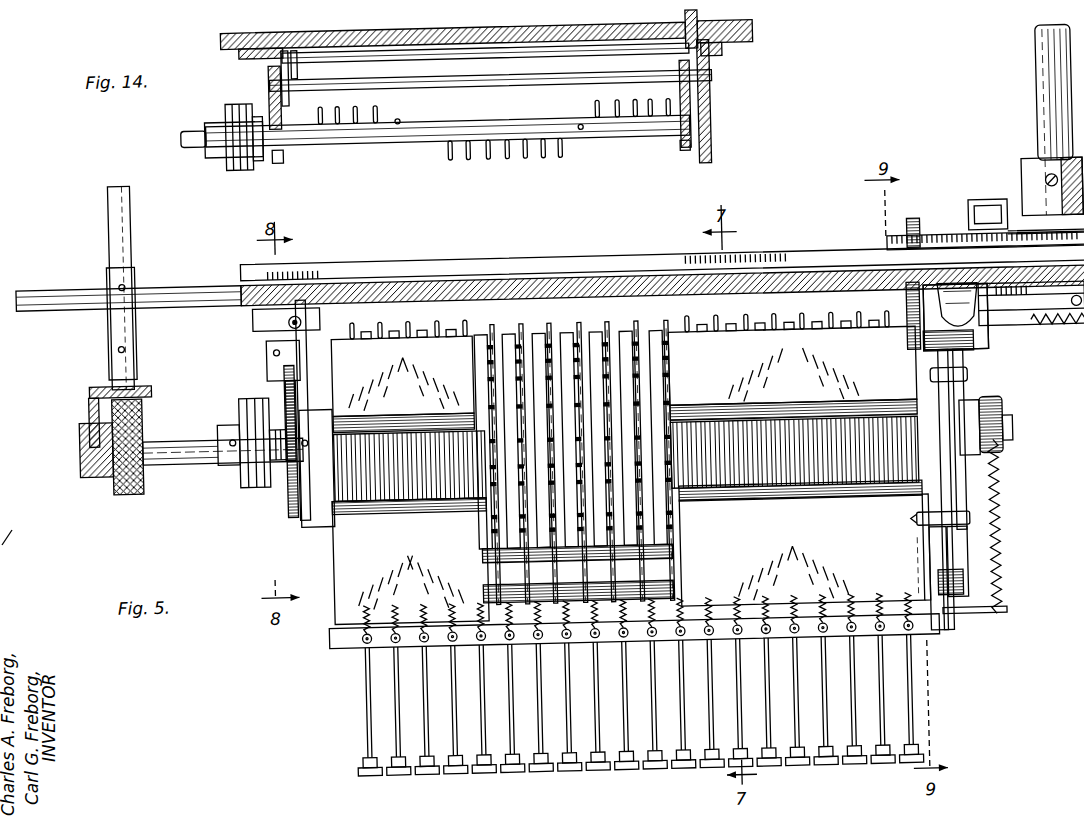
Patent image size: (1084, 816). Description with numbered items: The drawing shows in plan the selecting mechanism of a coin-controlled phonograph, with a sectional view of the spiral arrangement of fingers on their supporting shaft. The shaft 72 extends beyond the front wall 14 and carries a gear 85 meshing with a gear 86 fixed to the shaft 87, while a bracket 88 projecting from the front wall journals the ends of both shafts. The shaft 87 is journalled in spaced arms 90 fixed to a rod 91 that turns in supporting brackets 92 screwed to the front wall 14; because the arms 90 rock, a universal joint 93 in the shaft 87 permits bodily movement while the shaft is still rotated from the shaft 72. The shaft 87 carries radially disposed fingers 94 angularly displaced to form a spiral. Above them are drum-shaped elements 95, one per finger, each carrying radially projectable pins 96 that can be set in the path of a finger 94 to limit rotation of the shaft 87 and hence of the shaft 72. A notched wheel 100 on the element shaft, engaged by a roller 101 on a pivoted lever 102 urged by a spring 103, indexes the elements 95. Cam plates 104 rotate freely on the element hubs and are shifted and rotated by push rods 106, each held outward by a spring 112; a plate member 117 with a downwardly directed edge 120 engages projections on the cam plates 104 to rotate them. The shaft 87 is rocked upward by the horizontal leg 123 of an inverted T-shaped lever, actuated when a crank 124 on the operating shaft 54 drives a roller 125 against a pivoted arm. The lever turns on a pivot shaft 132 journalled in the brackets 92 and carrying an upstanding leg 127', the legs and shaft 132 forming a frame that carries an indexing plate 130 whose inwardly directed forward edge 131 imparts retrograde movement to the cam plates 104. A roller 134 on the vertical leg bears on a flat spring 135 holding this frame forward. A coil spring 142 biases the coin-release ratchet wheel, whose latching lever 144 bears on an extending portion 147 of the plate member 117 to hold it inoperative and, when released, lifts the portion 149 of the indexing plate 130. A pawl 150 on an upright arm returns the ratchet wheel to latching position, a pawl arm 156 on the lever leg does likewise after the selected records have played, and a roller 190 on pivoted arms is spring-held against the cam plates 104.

In FIG. 14, the front wall 14 is at (750, 36).
In FIG. 5, the front wall 14 is at (594, 277).
In FIG. 5, the operating shaft 54 is at (1049, 72).
In FIG. 5, the shaft 72 is at (118, 216).
In FIG. 5, the gear 85 is at (90, 465).
In FIG. 5, the gear 86 is at (130, 483).
In FIG. 14, the shaft 87 is at (188, 124).
In FIG. 5, the shaft 87 is at (182, 431).
In FIG. 5, the bracket 88 is at (105, 375).
In FIG. 14, the spaced arms 90 is at (278, 158).
In FIG. 14, the rod 91 is at (522, 86).
In FIG. 14, the supporting brackets 92 is at (256, 50).
In FIG. 5, the supporting brackets 92 is at (316, 298).
In FIG. 14, the universal joint 93 is at (232, 162).
In FIG. 5, the universal joint 93 is at (250, 479).
In FIG. 14, the fingers 94 is at (526, 161).
In FIG. 5, the elements 95 is at (513, 330).
In FIG. 5, the projectable pins 96 is at (630, 340).
In FIG. 5, the notched wheel 100 is at (292, 510).
In FIG. 5, the roller 101 is at (275, 455).
In FIG. 5, the pivoted lever 102 is at (270, 349).
In FIG. 5, the spring 103 is at (292, 312).
In FIG. 5, the cam plates 104 is at (528, 325).
In FIG. 5, the push rods 106 is at (366, 699).
In FIG. 5, the spring 112 is at (412, 592).
In FIG. 5, the plate member 117 is at (346, 594).
In FIG. 5, the downwardly directed edge 120 is at (805, 543).
In FIG. 14, the horizontally disposed leg 123 is at (692, 104).
In FIG. 5, the horizontally disposed leg 123 is at (918, 226).
In FIG. 5, the crank 124 is at (987, 202).
In FIG. 5, the roller 125 is at (981, 238).
In FIG. 14, the upstanding leg 127' is at (326, 67).
In FIG. 5, the indexing plate 130 is at (395, 350).
In FIG. 5, the inwardly directed forward edge 131 is at (853, 416).
In FIG. 14, the pivot shaft 132 is at (582, 63).
In FIG. 5, the roller 134 is at (978, 349).
In FIG. 5, the flat spring 135 is at (963, 317).
In FIG. 5, the coil spring 142 is at (1002, 464).
In FIG. 5, the latching lever 144 is at (966, 498).
In FIG. 5, the extending portion 147 is at (969, 527).
In FIG. 5, the portion 149 is at (972, 386).
In FIG. 5, the pawl 150 is at (956, 563).
In FIG. 5, the pawl arm 156 is at (928, 364).
In FIG. 5, the roller 190 is at (517, 563).